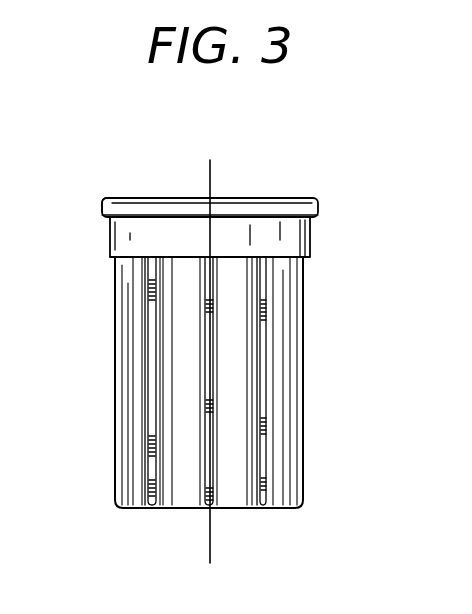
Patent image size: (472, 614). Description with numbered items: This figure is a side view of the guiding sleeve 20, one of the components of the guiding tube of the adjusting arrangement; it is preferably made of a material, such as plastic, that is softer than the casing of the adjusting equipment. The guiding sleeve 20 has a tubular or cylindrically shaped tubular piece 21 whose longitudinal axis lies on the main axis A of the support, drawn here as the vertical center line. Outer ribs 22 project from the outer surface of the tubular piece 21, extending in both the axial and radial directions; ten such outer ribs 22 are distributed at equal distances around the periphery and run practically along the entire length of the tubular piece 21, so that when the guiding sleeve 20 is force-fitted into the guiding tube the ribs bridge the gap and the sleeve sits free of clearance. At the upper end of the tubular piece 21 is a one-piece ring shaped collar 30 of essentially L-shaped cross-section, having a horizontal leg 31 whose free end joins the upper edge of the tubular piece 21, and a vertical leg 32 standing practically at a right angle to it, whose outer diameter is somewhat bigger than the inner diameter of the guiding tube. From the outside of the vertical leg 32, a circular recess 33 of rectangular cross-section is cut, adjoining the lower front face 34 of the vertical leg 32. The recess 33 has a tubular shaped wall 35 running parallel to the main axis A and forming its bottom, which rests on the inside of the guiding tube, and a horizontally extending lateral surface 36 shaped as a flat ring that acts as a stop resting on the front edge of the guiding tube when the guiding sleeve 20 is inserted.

The guiding sleeve 20 is at (182, 180).
The tubular piece 21 is at (237, 514).
The outer ribs 22 is at (163, 490).
The ring shaped collar 30 is at (293, 195).
The horizontal leg 31 is at (120, 198).
The vertical leg 32 is at (317, 243).
The recess 33 is at (110, 232).
The lower front face 34 is at (115, 272).
The tubular shaped wall 35 is at (110, 250).
The lateral surface 36 is at (104, 210).
The main axis A is at (212, 182).